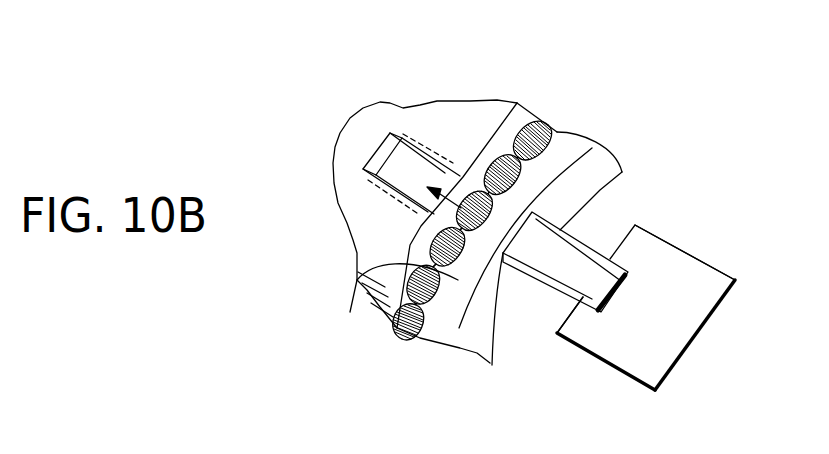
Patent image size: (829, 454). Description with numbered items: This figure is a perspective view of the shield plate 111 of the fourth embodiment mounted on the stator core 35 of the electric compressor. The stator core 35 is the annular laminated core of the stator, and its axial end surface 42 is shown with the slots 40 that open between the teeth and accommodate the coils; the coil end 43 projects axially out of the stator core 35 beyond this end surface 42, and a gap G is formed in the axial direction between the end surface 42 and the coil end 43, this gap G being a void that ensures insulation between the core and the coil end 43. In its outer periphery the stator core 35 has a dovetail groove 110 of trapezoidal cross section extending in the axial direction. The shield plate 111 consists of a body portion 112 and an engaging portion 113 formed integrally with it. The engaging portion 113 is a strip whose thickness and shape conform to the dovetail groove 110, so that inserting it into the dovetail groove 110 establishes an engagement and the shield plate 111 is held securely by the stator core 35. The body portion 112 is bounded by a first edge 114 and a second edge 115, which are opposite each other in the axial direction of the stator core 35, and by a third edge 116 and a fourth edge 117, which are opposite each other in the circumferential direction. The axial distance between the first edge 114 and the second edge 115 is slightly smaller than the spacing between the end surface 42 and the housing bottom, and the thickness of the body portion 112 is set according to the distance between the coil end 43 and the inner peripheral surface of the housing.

The stator core 35 is at (461, 118).
The slot 40 is at (560, 134).
The end surface 42 is at (550, 116).
The coil end 43 is at (478, 340).
The dovetail groove 110 is at (362, 170).
The shield plate 111 is at (641, 274).
The body portion 112 is at (641, 324).
The engaging portion 113 is at (583, 258).
The first edge 114 is at (557, 320).
The second edge 115 is at (680, 357).
The third edge 116 is at (597, 357).
The fourth edge 117 is at (690, 251).
The gap G is at (400, 310).